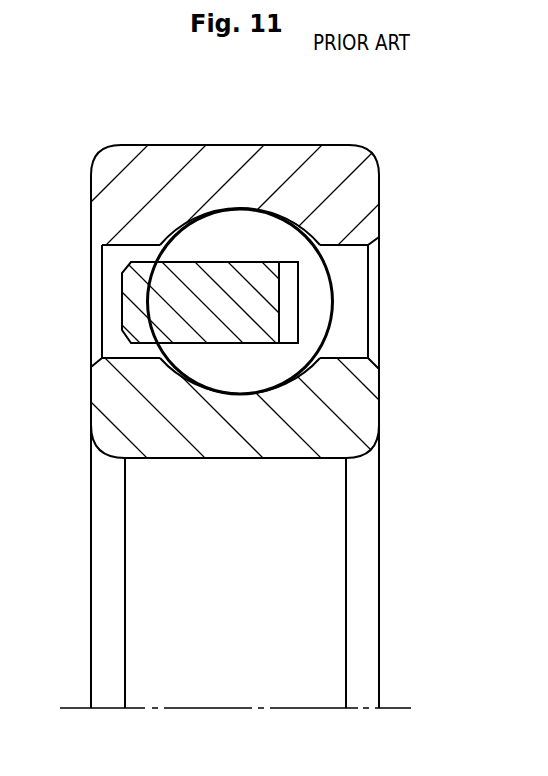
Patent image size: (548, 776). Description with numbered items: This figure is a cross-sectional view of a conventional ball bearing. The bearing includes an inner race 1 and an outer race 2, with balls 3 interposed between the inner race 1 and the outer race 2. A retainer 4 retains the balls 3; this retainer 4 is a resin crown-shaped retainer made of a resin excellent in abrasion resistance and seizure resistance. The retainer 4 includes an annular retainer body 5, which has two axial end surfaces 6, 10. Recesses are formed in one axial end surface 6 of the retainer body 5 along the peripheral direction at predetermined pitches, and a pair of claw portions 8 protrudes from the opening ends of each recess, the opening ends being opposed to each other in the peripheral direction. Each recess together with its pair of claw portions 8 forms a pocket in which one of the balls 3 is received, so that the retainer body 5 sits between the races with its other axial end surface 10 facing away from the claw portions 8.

The inner race 1 is at (357, 393).
The outer race 2 is at (362, 195).
The balls 3 is at (267, 233).
The retainer 4 is at (225, 343).
The retainer body 5 is at (212, 262).
The axial end surface 6 is at (279, 288).
The claw portions 8 is at (292, 323).
The axial end surface 10 is at (125, 307).